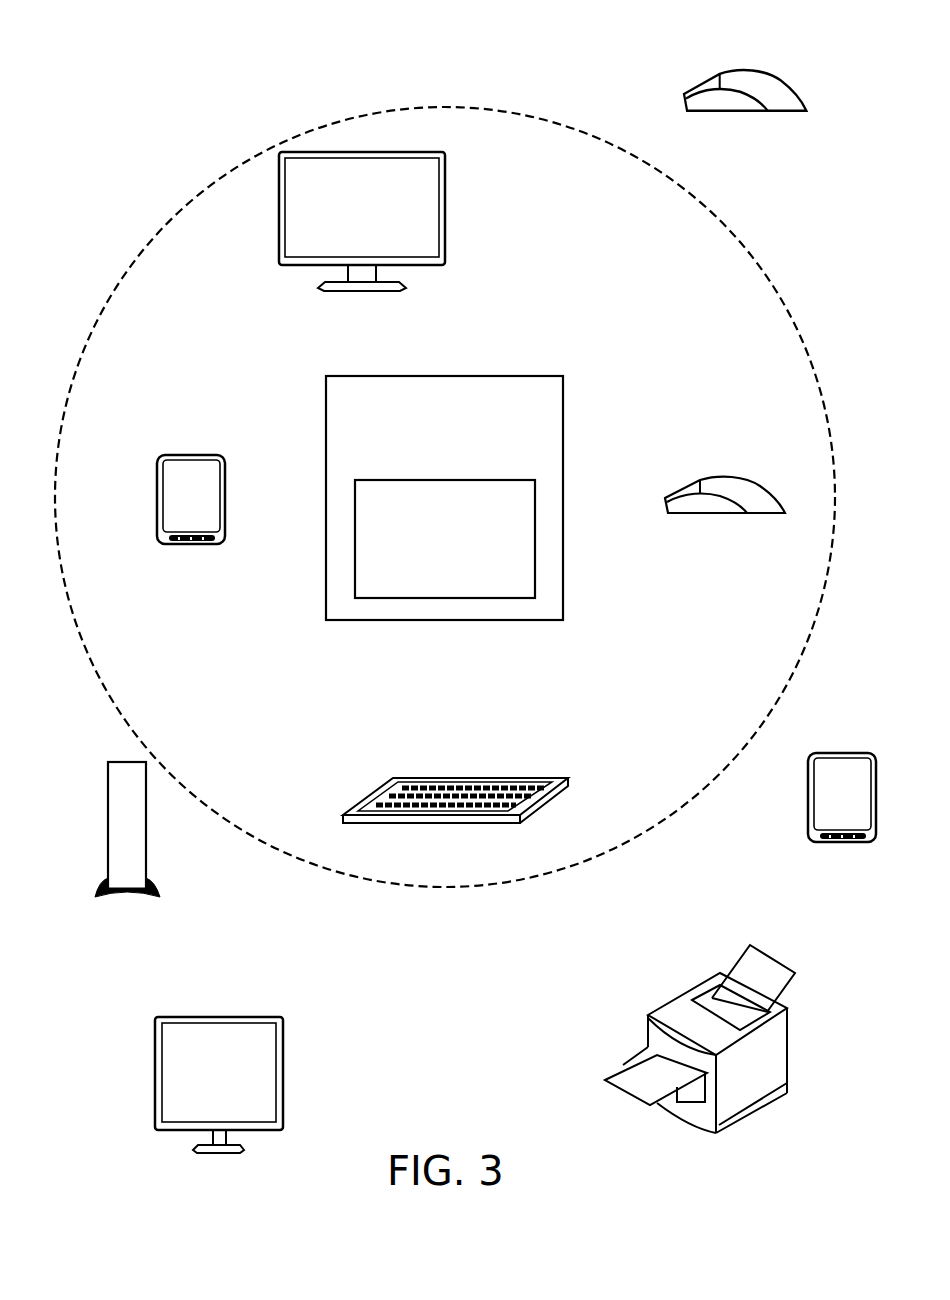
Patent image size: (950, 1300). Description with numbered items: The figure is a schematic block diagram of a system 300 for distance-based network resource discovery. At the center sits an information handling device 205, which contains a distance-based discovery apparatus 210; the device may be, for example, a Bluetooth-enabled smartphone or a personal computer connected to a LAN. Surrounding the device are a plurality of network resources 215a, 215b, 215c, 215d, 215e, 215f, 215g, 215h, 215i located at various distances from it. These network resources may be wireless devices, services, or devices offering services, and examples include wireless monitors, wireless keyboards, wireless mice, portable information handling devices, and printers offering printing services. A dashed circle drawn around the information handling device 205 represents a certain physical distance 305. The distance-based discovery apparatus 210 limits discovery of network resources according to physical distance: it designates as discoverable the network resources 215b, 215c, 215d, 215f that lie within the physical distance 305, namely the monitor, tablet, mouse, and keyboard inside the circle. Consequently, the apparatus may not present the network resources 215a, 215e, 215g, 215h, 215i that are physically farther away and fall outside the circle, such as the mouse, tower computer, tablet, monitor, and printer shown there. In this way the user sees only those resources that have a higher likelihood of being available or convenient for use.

The system 300 is at (92, 56).
The physical distance 305 is at (148, 246).
The information handling device 205 is at (444, 498).
The distance-based discovery apparatus 210 is at (445, 539).
The network resource 215a is at (683, 96).
The network resource 215b is at (280, 220).
The network resource 215c is at (157, 504).
The network resource 215d is at (728, 478).
The network resource 215e is at (108, 822).
The network resource 215f is at (342, 818).
The network resource 215g is at (808, 802).
The network resource 215h is at (155, 1077).
The network resource 215i is at (645, 1038).